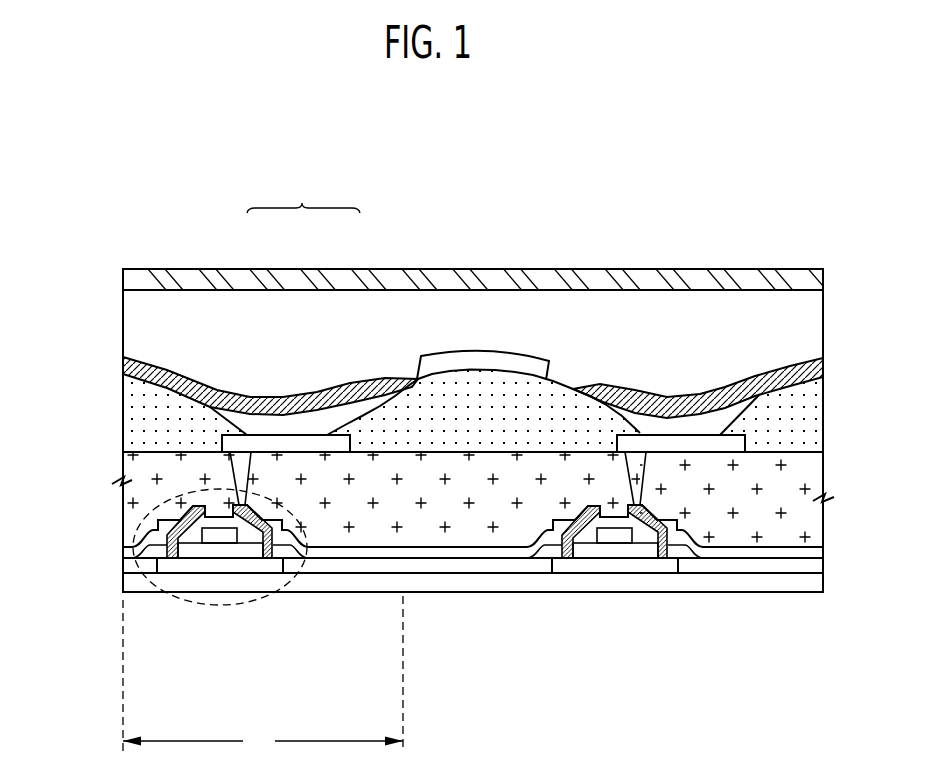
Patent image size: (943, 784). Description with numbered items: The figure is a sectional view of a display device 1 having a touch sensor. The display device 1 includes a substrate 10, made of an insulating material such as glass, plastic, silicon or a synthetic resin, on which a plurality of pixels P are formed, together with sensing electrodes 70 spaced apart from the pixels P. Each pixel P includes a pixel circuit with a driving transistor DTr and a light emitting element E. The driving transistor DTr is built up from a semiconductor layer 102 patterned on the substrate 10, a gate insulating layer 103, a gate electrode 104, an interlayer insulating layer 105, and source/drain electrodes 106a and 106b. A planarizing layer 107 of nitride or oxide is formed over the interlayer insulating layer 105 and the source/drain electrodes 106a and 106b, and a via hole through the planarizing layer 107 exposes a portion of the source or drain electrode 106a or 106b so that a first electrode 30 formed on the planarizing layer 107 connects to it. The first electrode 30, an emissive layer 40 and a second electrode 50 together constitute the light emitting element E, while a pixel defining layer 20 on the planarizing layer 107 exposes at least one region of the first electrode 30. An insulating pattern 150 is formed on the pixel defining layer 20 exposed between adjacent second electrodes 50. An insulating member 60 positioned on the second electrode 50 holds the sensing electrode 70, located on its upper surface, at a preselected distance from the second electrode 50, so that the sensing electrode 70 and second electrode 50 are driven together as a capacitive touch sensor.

The display device 1 is at (782, 203).
The substrate 10 is at (124, 585).
The pixel defining layer 20 is at (490, 423).
The first electrode 30 is at (263, 440).
The emissive layer 40 is at (327, 417).
The second electrode 50 is at (297, 395).
The insulating member 60 is at (127, 315).
The sensing electrode 70 is at (127, 283).
The semiconductor layer 102 is at (207, 568).
The gate insulating layer 103 is at (134, 565).
The gate electrode 104 is at (222, 537).
The interlayer insulating layer 105 is at (135, 535).
The source electrode 106a is at (182, 540).
The drain electrode 106b is at (273, 527).
The planarizing layer 107 is at (124, 459).
The insulating pattern 150 is at (490, 360).
The driving transistor DTr is at (123, 494).
The light emitting element E is at (303, 194).
The pixel P is at (263, 676).